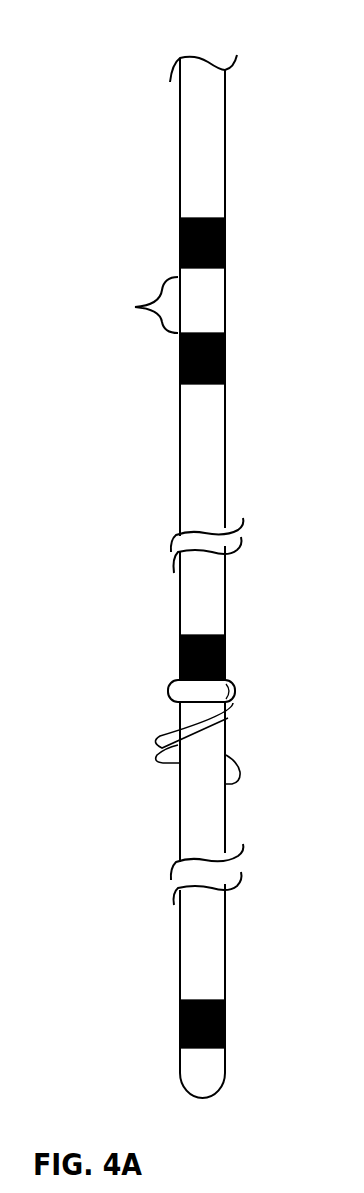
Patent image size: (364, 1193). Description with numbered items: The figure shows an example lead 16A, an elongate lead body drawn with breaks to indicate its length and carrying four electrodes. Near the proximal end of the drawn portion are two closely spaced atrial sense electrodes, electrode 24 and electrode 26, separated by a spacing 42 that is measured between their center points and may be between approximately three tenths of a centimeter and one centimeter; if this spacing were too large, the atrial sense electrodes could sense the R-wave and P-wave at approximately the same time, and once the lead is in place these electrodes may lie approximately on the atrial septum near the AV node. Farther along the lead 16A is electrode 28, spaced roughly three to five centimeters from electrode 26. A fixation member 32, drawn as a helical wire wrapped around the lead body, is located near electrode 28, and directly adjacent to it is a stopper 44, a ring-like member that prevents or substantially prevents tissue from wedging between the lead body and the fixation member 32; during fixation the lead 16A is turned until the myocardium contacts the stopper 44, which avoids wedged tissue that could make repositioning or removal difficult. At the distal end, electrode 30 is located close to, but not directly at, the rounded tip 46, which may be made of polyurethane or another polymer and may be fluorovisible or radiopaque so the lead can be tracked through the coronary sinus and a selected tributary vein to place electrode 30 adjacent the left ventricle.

The lead 16A is at (230, 56).
The electrode 24 is at (228, 251).
The electrode 26 is at (228, 358).
The spacing 42 is at (138, 305).
The electrode 28 is at (228, 661).
The stopper 44 is at (235, 696).
The fixation member 32 is at (226, 781).
The electrode 30 is at (228, 1029).
The tip 46 is at (222, 1081).